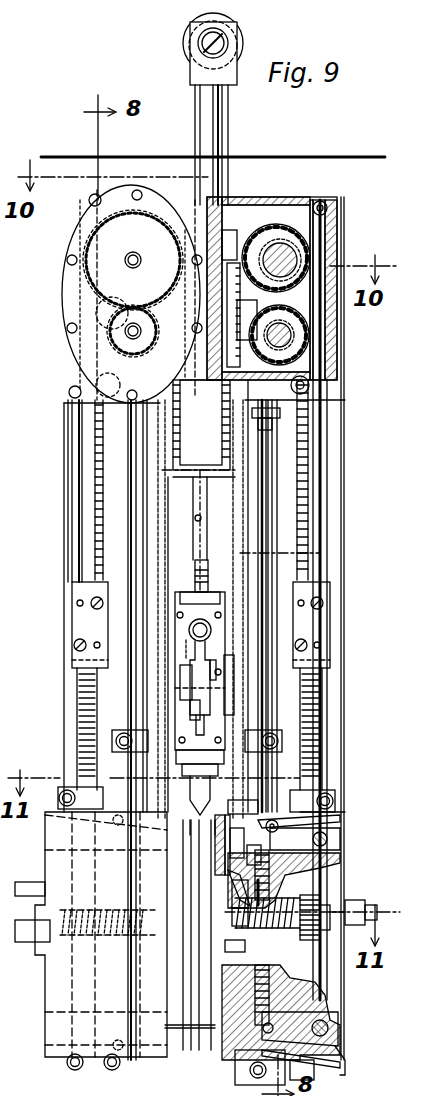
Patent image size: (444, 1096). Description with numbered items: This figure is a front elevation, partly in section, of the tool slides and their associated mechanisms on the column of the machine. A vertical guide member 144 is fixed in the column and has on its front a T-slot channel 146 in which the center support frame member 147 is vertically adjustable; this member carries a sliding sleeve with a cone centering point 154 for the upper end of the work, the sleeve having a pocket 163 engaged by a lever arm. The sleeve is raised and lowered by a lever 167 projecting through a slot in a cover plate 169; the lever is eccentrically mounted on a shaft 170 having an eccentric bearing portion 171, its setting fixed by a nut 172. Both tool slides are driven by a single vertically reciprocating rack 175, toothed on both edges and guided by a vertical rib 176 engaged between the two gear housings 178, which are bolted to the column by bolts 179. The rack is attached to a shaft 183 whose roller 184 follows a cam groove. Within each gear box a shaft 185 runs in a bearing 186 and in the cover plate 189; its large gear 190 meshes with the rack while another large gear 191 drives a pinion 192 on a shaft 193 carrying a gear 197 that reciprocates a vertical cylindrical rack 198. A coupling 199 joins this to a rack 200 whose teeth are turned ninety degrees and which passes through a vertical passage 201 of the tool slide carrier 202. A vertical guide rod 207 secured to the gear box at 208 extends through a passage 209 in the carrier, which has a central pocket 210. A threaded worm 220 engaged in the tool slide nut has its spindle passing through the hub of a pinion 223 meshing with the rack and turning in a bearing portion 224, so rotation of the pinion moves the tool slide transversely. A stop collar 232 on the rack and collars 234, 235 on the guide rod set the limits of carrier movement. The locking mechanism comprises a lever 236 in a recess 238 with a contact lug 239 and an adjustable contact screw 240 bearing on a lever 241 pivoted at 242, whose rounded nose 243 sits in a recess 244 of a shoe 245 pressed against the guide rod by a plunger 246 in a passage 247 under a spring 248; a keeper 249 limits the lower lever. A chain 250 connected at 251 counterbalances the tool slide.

The vertical guide member 144 is at (185, 500).
The T-slot channel 146 is at (198, 522).
The center support frame member 147 is at (182, 602).
The cone centering point 154 is at (178, 815).
The pocket 163 is at (185, 640).
The lever 167 is at (178, 655).
The cover plate 169 is at (185, 640).
The shaft 170 is at (188, 700).
The eccentric bearing portion 171 is at (210, 726).
The nut 172 is at (236, 692).
The rack 175 is at (223, 232).
The vertical rib 176 is at (190, 447).
The gear housing 178 is at (270, 212).
The bolts 179 is at (95, 200).
The shaft 183 is at (210, 128).
The roller 184 is at (243, 43).
The shaft 185 is at (296, 255).
The bearing 186 is at (318, 205).
The cover plate 189 is at (75, 240).
The large gear 190 is at (300, 298).
The large gear 191 is at (95, 278).
The pinion 192 is at (96, 362).
The shaft 193 is at (300, 345).
The gear 197 is at (108, 340).
The cylindrical rack 198 is at (100, 318).
The coupling 199 is at (330, 250).
The rack 200 is at (300, 685).
The vertical passage 201 is at (300, 880).
The tool slide carrier 202 is at (290, 890).
The vertical guide rod 207 is at (262, 520).
The securing point 208 is at (282, 412).
The passage 209 is at (228, 1035).
The pocket 210 is at (262, 958).
The threaded worm 220 is at (262, 930).
The pinion 223 is at (320, 930).
The bearing portion 224 is at (330, 914).
The stop collar 232 is at (318, 792).
The adjustable collar 234 is at (262, 745).
The adjustable collar 235 is at (236, 1074).
The lever 236 is at (340, 822).
The recess 238 is at (335, 858).
The contact lug 239 is at (335, 806).
The adjustable contact screw 240 is at (262, 785).
The lever 241 is at (300, 1025).
The pivot 242 is at (344, 840).
The rounded nose 243 is at (240, 836).
The recess 244 is at (252, 852).
The shoe 245 is at (258, 870).
The plunger 246 is at (262, 888).
The passage 247 is at (250, 900).
The spring 248 is at (250, 925).
The keeper 249 is at (342, 1068).
The chain 250 is at (240, 462).
The chain connection point 251 is at (202, 808).